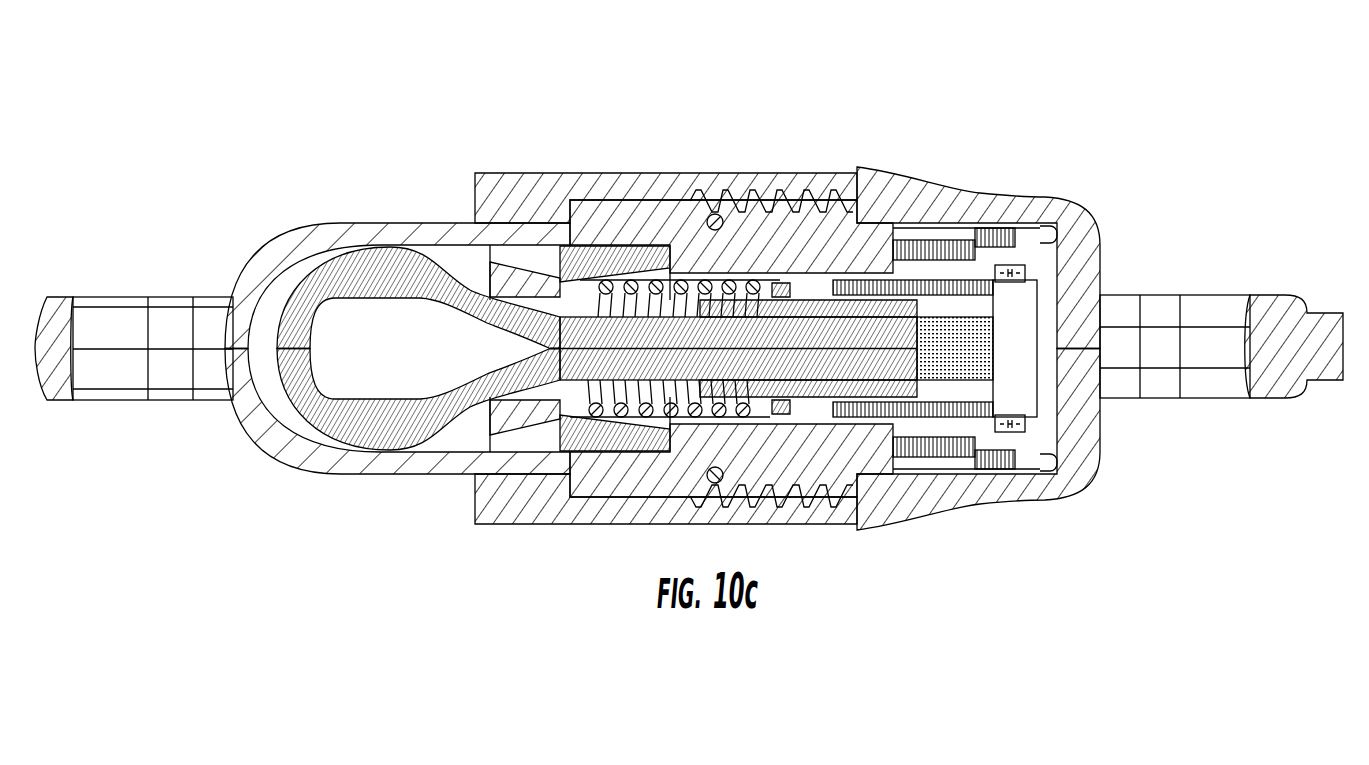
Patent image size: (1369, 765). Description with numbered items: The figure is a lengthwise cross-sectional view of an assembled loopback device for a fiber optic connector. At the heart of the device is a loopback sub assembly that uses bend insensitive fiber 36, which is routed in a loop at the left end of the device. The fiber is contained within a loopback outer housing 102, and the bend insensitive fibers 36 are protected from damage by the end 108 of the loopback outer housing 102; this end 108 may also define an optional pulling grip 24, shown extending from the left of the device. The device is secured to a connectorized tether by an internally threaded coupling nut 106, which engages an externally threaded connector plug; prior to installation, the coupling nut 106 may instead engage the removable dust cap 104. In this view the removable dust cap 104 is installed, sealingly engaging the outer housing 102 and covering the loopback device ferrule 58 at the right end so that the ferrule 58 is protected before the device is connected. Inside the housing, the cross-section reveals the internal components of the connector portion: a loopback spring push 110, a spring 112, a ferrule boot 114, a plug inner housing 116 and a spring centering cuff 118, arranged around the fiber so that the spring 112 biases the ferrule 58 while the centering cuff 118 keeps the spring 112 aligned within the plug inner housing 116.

The pulling grip 24 is at (133, 297).
The bend insensitive fiber 36 is at (372, 447).
The loopback device ferrule 58 is at (985, 300).
The loopback outer housing 102 is at (615, 215).
The removable dust cap 104 is at (903, 185).
The coupling nut 106 is at (500, 173).
The end of the loopback outer housing 108 is at (313, 222).
The loopback spring push 110 is at (628, 270).
The spring 112 is at (772, 430).
The ferrule boot 114 is at (803, 300).
The plug inner housing 116 is at (860, 445).
The spring centering cuff 118 is at (790, 418).